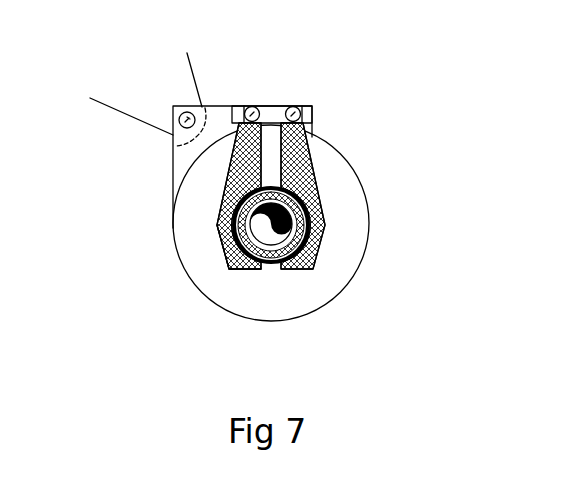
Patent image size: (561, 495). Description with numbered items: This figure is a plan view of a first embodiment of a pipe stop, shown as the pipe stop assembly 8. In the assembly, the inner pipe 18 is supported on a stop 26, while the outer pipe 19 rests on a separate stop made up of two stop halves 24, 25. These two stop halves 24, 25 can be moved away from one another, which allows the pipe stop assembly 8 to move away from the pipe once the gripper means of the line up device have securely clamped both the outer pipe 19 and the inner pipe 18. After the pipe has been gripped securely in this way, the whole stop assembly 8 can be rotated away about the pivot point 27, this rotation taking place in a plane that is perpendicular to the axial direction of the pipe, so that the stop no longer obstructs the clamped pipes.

The pipe stop assembly 8 is at (334, 114).
The inner pipe 18 is at (229, 270).
The outer pipe 19 is at (300, 164).
The stop half 24 is at (312, 226).
The stop half 25 is at (219, 229).
The stop 26 is at (320, 285).
The pivot point 27 is at (181, 114).